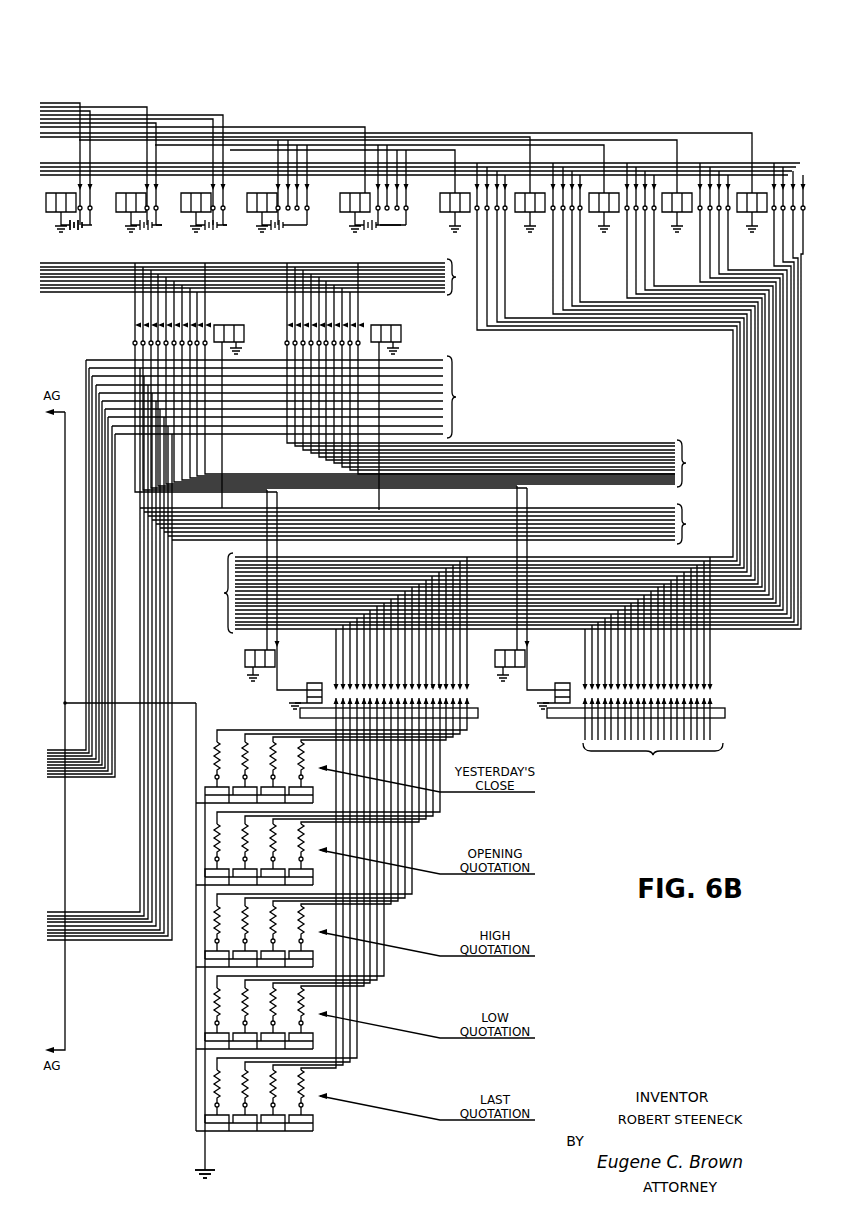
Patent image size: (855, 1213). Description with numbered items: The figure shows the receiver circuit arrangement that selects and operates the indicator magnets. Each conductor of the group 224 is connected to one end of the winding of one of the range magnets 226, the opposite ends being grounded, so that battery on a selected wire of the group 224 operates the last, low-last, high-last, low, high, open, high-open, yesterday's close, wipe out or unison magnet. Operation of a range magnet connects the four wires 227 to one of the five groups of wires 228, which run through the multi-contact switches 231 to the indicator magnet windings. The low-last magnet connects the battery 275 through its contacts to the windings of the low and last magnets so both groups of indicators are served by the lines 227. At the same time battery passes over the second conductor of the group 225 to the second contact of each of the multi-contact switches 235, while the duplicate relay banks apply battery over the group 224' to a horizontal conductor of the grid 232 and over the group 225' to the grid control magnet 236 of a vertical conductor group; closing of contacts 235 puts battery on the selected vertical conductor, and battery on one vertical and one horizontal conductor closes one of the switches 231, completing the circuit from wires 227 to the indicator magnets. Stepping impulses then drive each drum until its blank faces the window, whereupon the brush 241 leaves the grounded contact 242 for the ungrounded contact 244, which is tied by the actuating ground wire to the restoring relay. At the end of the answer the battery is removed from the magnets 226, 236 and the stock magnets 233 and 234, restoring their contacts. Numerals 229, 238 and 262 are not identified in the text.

The conductor group 224 is at (396, 142).
The wires 227 is at (62, 167).
The battery 275 is at (86, 231).
The range magnets 226 is at (416, 188).
The conductor group 225 is at (248, 291).
The multi-contact switches 235 is at (126, 334).
The grid control magnet 236 is at (230, 325).
The grid 232 is at (286, 397).
The groups of wires 228 is at (730, 378).
The conductor group 224' is at (94, 568).
The conductor group 225' is at (366, 665).
The stock magnet 233 is at (245, 657).
The stock magnet 234 is at (312, 683).
The multi-contact switches 231 is at (470, 702).
The conductor 229 is at (240, 730).
The resistor 238 is at (219, 762).
The brush 241 is at (212, 787).
The grounded contact 242 is at (208, 800).
The ungrounded contact 244 is at (230, 800).
The ground 262 is at (212, 1172).